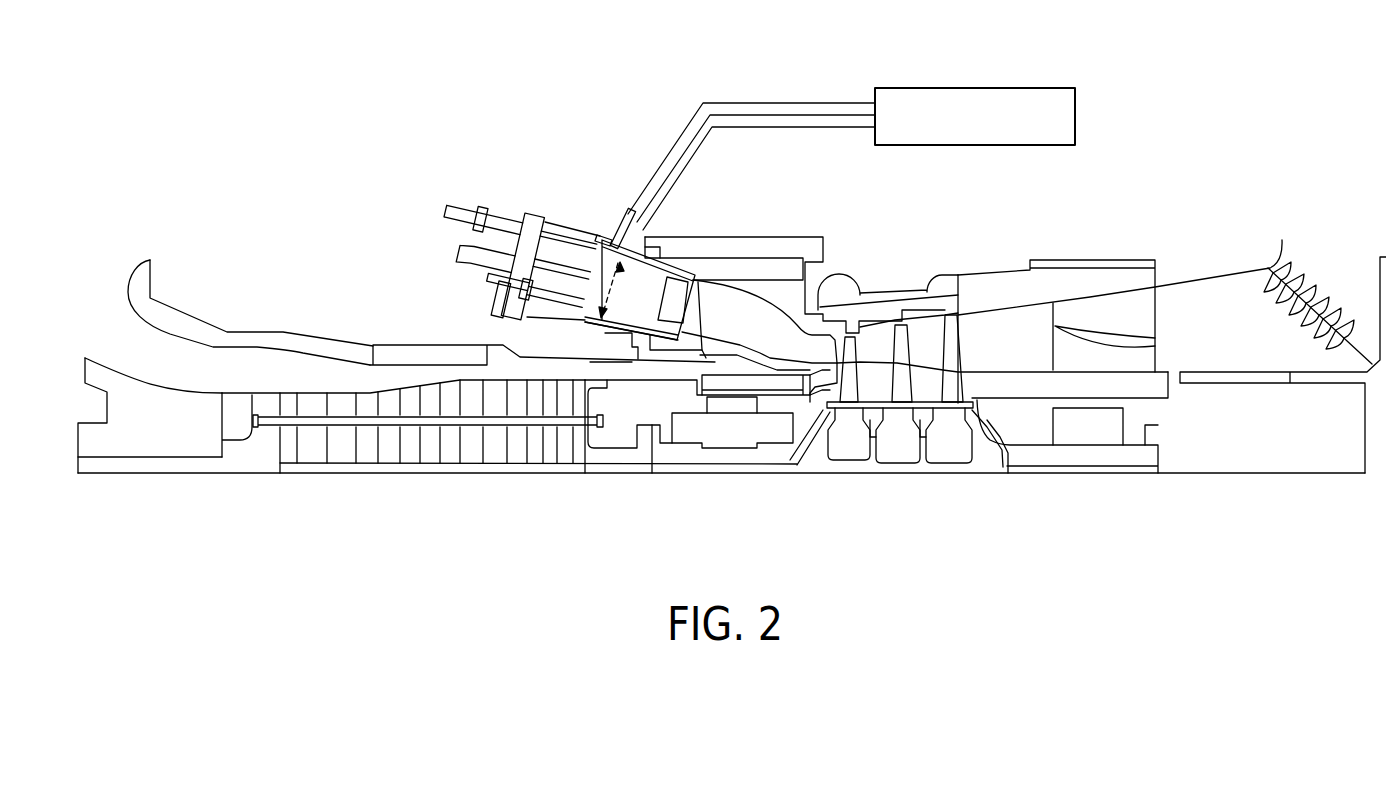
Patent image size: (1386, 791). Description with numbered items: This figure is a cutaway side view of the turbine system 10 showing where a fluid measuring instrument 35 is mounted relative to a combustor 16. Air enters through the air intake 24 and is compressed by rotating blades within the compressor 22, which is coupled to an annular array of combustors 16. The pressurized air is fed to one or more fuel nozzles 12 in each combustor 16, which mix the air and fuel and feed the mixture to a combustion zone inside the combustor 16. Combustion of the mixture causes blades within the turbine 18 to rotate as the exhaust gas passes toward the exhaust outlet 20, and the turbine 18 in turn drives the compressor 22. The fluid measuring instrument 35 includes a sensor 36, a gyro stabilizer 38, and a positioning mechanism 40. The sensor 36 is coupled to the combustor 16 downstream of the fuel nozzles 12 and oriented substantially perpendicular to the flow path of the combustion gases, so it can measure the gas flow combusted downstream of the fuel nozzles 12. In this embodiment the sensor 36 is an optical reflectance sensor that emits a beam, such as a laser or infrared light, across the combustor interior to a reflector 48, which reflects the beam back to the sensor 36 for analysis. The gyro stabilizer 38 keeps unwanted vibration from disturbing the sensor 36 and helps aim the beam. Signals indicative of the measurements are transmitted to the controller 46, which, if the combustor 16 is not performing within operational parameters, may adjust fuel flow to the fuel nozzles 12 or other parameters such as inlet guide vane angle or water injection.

The turbine system 10 is at (666, 110).
The fuel nozzle 12 is at (565, 270).
The combustor 16 is at (557, 158).
The turbine 18 is at (937, 226).
The exhaust outlet 20 is at (1379, 226).
The compressor 22 is at (540, 336).
The air intake 24 is at (146, 365).
The fluid measuring instrument 35 is at (630, 176).
The sensor 36 is at (618, 258).
The gyro stabilizer 38 is at (618, 242).
The positioning mechanism 40 is at (623, 220).
The controller 46 is at (975, 88).
The reflector 48 is at (598, 325).